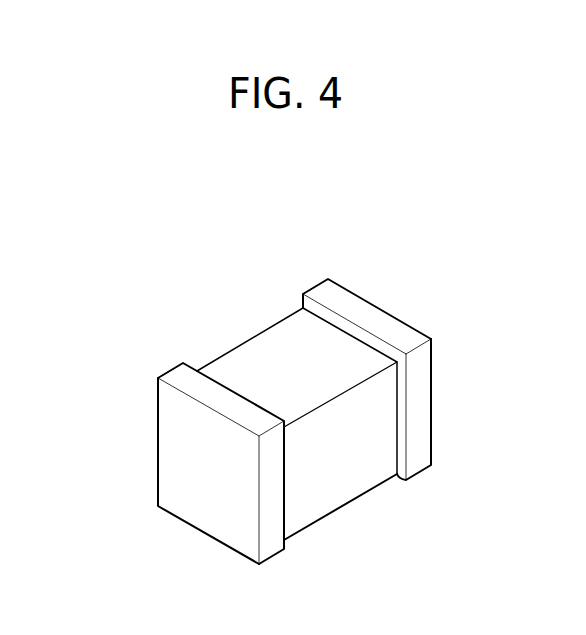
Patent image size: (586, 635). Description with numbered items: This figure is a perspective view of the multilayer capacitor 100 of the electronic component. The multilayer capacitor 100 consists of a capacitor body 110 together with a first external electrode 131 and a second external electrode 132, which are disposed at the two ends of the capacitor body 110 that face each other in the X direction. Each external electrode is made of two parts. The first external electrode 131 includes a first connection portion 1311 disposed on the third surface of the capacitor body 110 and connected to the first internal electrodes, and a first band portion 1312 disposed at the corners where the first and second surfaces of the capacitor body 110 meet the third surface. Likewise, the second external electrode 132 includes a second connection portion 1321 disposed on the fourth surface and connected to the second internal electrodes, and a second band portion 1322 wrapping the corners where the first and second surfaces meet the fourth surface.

The multilayer capacitor 100 is at (261, 331).
The capacitor body 110 is at (230, 365).
The first external electrode 131 is at (81, 428).
The first connection portion 1311 is at (205, 465).
The first band portion 1312 is at (210, 393).
The second external electrode 132 is at (498, 247).
The second connection portion 1321 is at (415, 330).
The second band portion 1322 is at (368, 315).